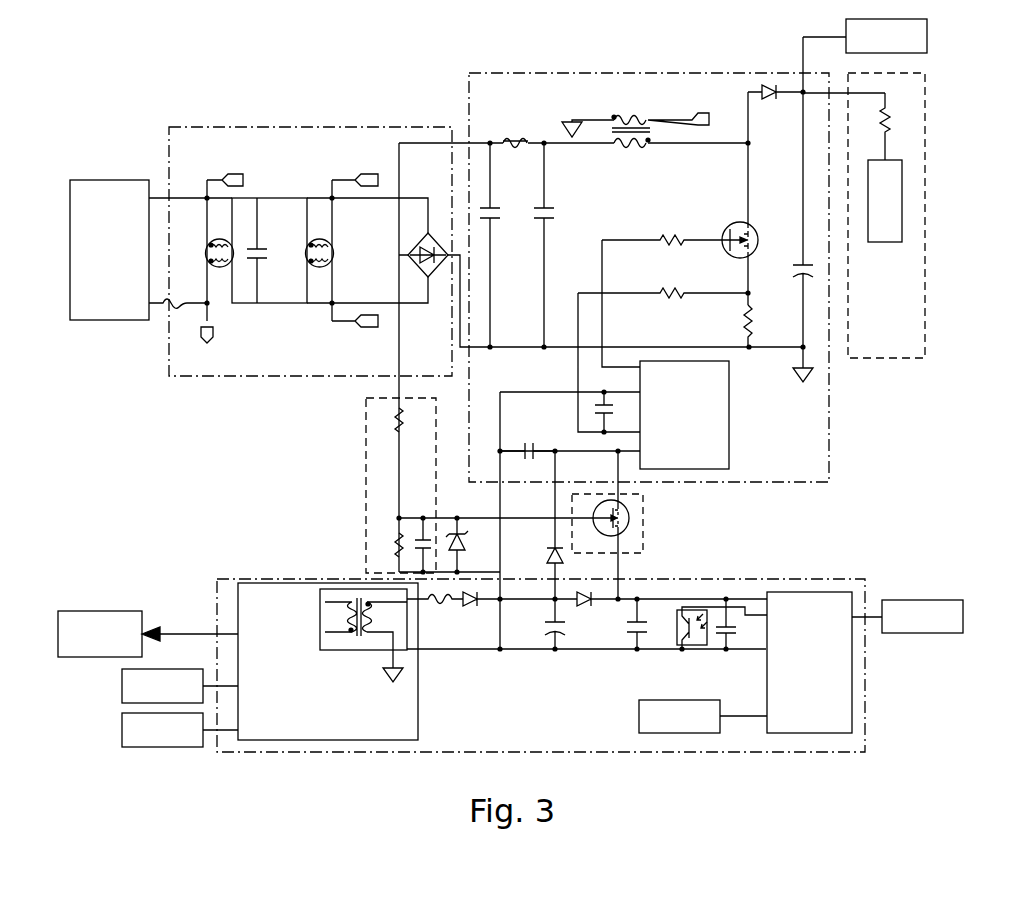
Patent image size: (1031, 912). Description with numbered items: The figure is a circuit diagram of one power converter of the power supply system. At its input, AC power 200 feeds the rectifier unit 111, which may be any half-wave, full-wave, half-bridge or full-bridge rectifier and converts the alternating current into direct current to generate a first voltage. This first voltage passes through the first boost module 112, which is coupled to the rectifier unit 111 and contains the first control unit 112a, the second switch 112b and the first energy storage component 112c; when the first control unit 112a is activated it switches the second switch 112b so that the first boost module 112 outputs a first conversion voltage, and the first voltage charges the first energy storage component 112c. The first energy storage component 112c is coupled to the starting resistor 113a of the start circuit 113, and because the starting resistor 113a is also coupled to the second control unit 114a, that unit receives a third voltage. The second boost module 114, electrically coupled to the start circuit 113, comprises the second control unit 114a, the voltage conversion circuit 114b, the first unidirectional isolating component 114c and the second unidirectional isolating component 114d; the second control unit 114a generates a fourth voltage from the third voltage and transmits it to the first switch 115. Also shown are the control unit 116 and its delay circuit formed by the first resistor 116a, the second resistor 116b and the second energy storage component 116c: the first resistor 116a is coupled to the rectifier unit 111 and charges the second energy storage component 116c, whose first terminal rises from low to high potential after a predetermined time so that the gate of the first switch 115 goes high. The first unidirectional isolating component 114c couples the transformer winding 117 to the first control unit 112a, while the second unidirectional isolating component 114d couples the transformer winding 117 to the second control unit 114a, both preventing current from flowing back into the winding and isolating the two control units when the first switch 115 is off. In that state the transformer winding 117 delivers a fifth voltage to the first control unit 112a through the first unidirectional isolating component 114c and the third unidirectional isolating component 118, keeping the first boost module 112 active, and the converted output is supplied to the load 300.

The AC power 200 is at (128, 178).
The rectifier unit 111 is at (240, 127).
The first boost module 112 is at (652, 73).
The first control unit 112a is at (729, 417).
The second switch 112b is at (724, 232).
The first energy storage component 112c is at (815, 270).
The start circuit 113 is at (925, 90).
The starting resistor 113a is at (893, 118).
The second boost module 114 is at (790, 753).
The second control unit 114a is at (800, 590).
The voltage conversion circuit 114b is at (234, 605).
The first unidirectional isolating component 114c is at (473, 610).
The second unidirectional isolating component 114d is at (583, 610).
The first switch 115 is at (645, 520).
The control unit 116 is at (365, 468).
The first resistor 116a is at (393, 421).
The second resistor 116b is at (396, 543).
The second energy storage component 116c is at (418, 560).
The transformer winding 117 is at (355, 653).
The third unidirectional isolating component 118 is at (549, 557).
The load 300 is at (100, 610).